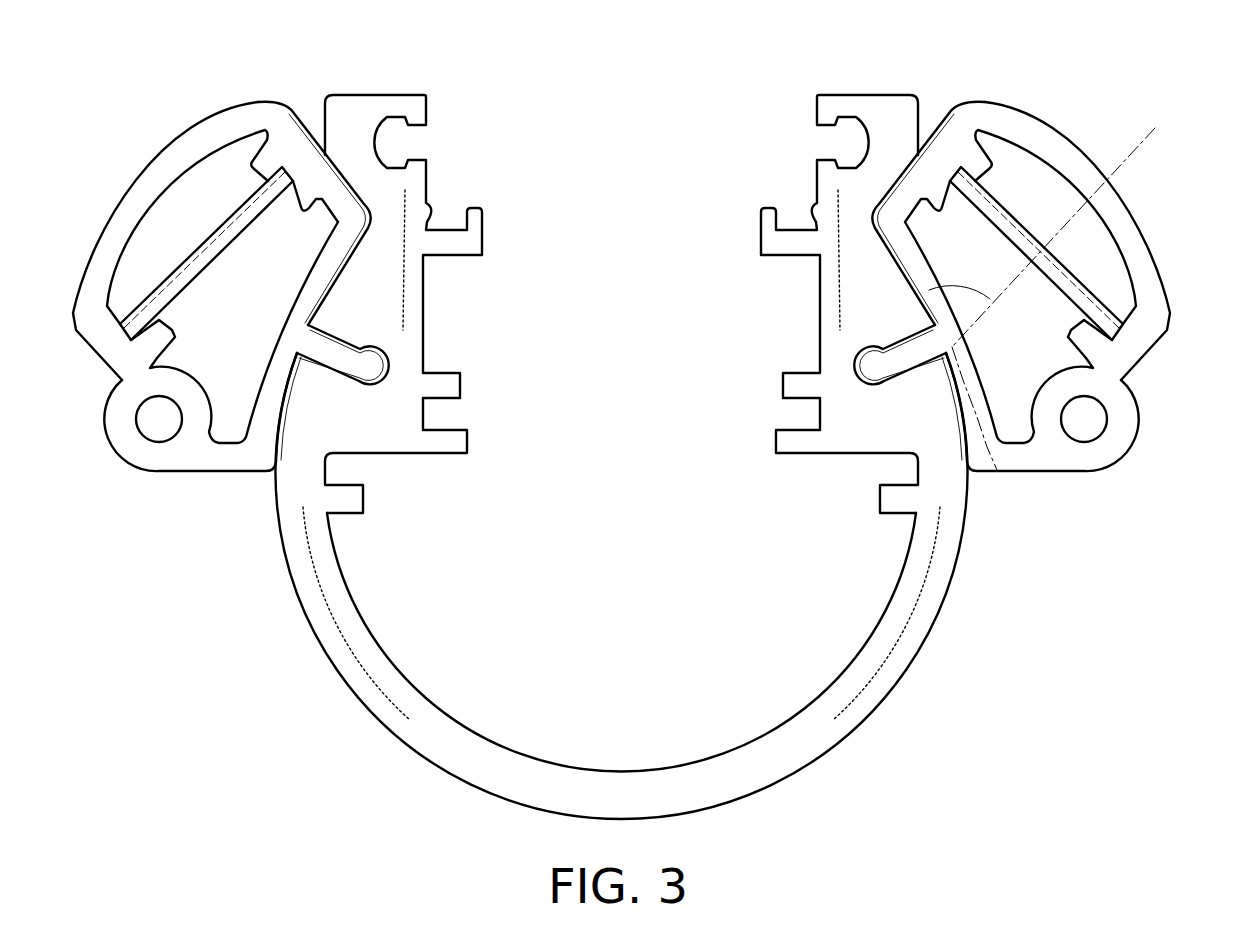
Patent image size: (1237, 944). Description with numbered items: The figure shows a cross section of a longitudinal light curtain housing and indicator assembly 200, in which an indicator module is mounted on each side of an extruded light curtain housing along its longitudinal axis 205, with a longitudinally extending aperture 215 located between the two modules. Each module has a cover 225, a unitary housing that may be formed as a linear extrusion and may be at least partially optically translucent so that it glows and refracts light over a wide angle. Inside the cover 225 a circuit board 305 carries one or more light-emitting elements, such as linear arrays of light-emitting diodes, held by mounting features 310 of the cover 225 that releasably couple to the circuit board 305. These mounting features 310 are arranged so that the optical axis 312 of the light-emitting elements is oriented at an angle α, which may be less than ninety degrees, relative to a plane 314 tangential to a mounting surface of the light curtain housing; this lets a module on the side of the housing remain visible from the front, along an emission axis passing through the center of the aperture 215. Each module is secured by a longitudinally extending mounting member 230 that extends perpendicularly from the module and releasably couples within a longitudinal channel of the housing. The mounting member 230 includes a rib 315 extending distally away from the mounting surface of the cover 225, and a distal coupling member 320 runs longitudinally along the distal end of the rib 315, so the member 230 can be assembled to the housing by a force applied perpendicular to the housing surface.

The longitudinal light curtain housing and indicator assembly 200 is at (233, 60).
The longitudinal axis 205 is at (100, 460).
The longitudinally extending aperture 215 is at (630, 140).
The cover 225 is at (989, 100).
The longitudinally extending mounting member 230 is at (327, 378).
The circuit board 305 is at (1027, 258).
The mounting features 310 is at (1092, 345).
The optical axis 312 is at (1130, 152).
The plane tangential to a mounting surface 314 is at (987, 448).
The rib 315 is at (924, 235).
The distal coupling member 320 is at (870, 370).